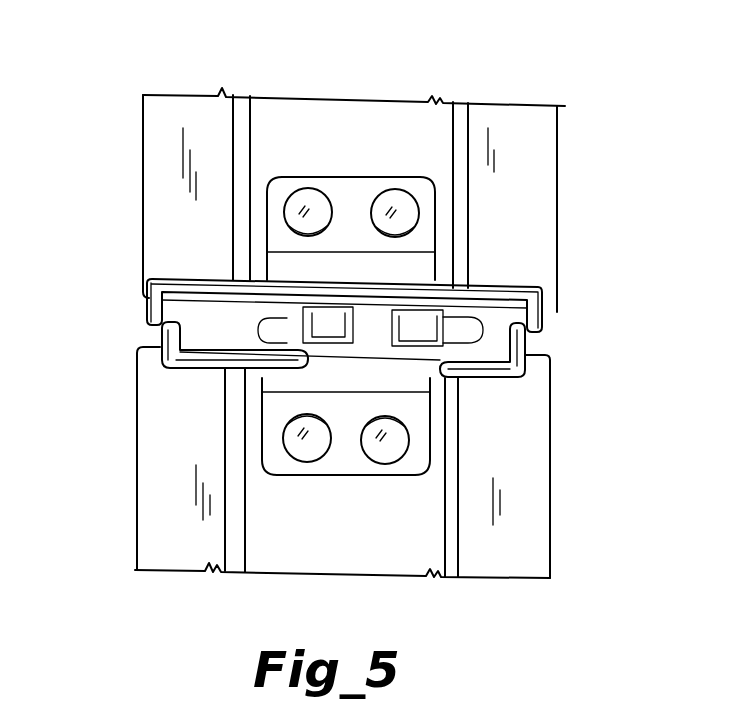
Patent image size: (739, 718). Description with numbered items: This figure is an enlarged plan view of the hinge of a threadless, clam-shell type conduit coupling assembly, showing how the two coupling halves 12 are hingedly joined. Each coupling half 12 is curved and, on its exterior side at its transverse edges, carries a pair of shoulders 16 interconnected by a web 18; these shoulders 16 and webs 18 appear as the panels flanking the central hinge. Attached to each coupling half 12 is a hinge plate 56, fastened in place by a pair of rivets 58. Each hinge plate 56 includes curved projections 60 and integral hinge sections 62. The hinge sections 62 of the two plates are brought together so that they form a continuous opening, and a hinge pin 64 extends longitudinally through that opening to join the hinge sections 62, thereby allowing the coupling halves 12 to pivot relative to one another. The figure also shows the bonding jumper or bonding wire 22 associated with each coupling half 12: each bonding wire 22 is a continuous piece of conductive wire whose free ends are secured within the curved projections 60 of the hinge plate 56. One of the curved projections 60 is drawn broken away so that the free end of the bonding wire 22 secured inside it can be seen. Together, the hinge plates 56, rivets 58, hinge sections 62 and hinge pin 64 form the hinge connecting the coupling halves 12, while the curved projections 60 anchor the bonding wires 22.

The coupling halves 12 is at (578, 128).
The shoulders 16 is at (172, 118).
The web 18 is at (282, 117).
The bonding jumper/wire 22 is at (158, 338).
The hinge plates 56 is at (345, 180).
The rivets 58 is at (323, 213).
The curved projections 60 is at (440, 310).
The hinge sections 62 is at (275, 320).
The hinge pin 64 is at (463, 325).